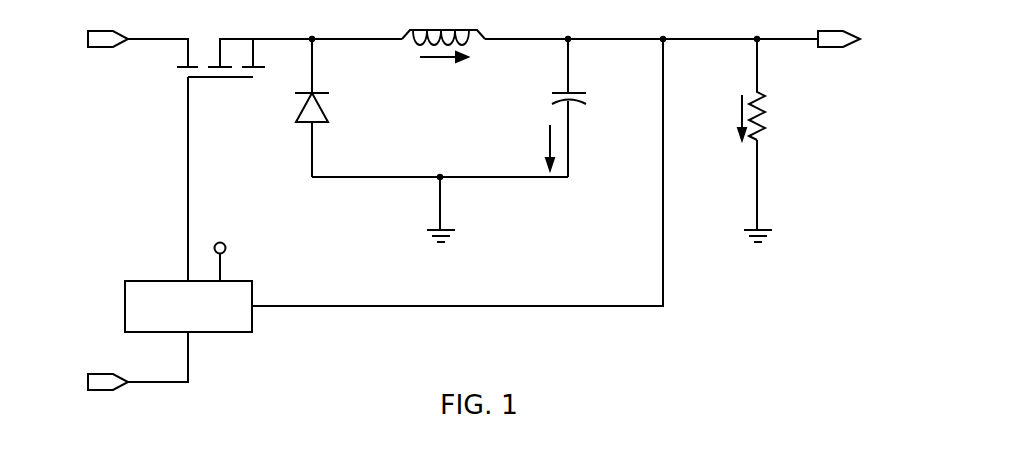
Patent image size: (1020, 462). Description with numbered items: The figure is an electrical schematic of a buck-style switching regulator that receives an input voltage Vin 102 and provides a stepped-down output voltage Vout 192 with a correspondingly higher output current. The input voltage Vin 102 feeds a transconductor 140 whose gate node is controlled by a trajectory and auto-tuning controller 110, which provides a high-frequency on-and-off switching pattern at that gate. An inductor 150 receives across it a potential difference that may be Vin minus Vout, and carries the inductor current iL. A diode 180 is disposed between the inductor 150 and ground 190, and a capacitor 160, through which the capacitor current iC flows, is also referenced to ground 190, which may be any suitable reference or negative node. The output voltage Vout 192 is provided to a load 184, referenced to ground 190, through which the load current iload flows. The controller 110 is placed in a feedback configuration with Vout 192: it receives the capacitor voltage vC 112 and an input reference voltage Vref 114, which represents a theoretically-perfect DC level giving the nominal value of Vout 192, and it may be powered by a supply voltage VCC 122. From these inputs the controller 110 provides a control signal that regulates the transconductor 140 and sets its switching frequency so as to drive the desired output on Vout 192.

The input voltage Vin 102 is at (100, 30).
The trajectory and auto-tuning controller 110 is at (155, 280).
The capacitor voltage vC 112 is at (447, 308).
The reference voltage Vref 114 is at (100, 373).
The supply voltage VCC 122 is at (226, 245).
The transconductor 140 is at (222, 79).
The inductor 150 is at (443, 30).
The capacitor 160 is at (582, 93).
The diode 180 is at (322, 107).
The load 184 is at (766, 104).
The ground 190 is at (450, 231).
The output voltage Vout 192 is at (830, 30).